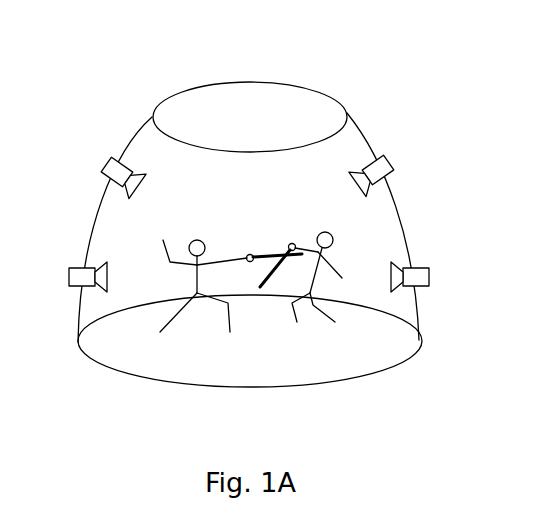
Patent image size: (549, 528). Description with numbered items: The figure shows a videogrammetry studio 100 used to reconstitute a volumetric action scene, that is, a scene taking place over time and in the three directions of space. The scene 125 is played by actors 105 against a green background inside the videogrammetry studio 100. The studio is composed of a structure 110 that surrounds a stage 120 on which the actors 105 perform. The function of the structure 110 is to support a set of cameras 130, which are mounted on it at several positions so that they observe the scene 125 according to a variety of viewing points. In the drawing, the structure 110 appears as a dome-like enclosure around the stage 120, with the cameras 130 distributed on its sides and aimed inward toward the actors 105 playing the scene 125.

The videogrammetry studio 100 is at (254, 217).
The actors 105 is at (192, 213).
The structure 110 is at (97, 210).
The stage 120 is at (388, 368).
The scene 125 is at (252, 135).
The cameras 130 is at (113, 162).